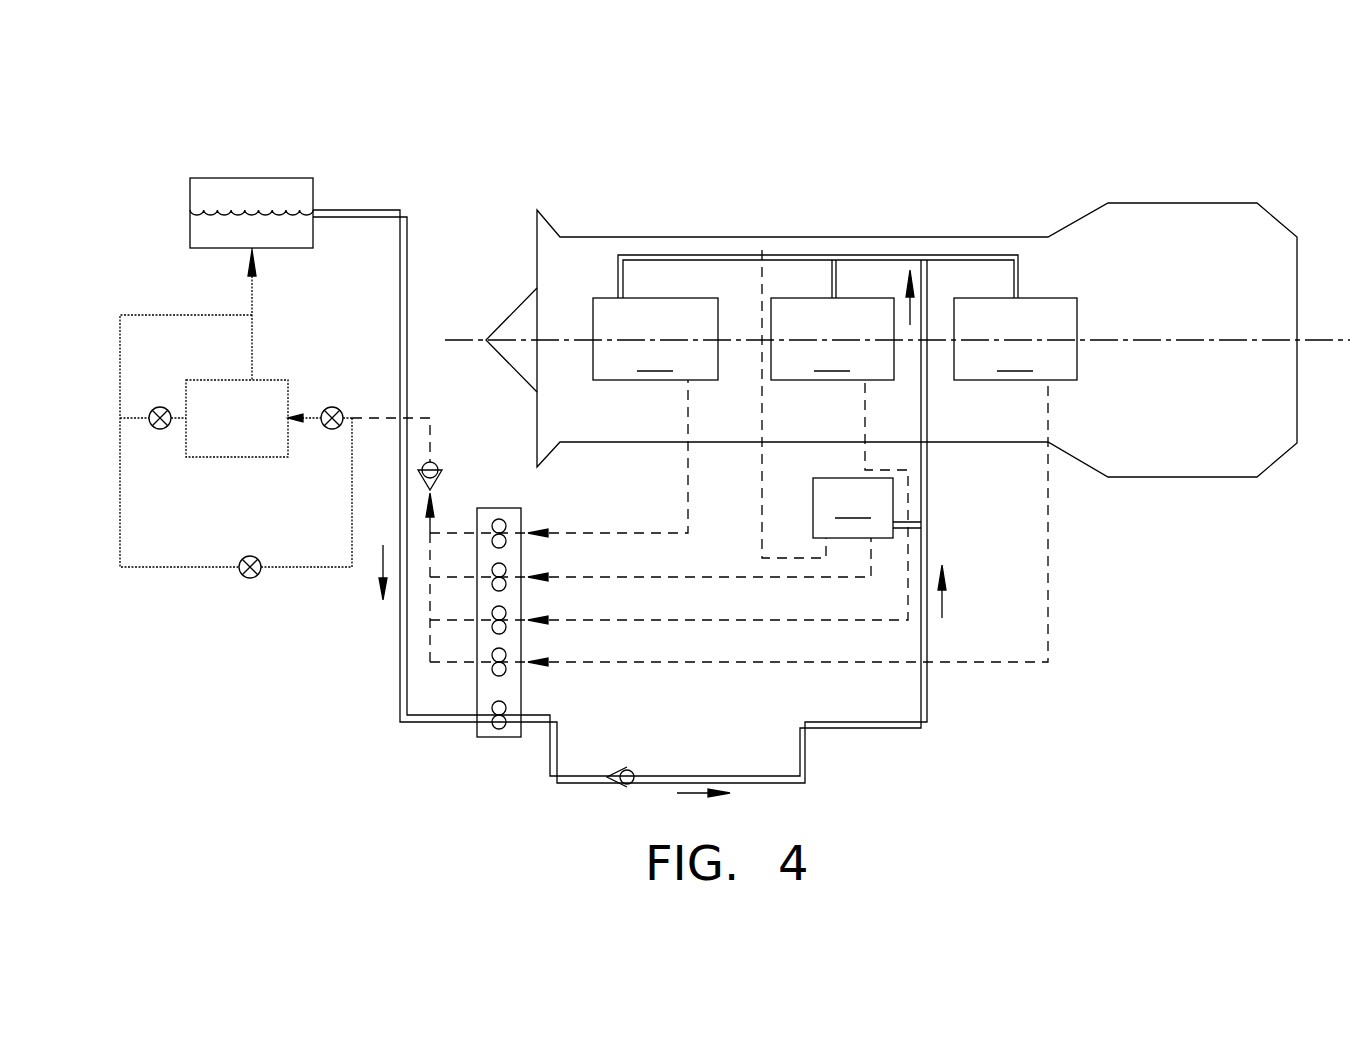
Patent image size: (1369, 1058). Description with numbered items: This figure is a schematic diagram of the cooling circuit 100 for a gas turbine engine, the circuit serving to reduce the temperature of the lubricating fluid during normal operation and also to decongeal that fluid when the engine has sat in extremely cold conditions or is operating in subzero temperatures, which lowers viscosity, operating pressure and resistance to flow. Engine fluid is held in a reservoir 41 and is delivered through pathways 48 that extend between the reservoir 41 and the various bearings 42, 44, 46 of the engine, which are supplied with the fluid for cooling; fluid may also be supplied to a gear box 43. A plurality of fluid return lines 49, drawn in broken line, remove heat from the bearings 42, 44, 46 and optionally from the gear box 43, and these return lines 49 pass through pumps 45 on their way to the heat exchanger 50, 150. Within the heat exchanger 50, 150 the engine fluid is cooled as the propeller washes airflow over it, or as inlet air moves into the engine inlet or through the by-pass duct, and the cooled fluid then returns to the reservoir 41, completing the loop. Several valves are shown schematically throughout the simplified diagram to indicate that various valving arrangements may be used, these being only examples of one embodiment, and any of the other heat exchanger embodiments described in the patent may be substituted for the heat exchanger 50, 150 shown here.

The cooling circuit 100 is at (1040, 120).
The reservoir 41 is at (253, 178).
The heat exchanger 50 is at (236, 413).
The heat exchanger 150 is at (283, 431).
The pathways 48 is at (865, 730).
The bearing 42 is at (655, 339).
The bearing 44 is at (832, 339).
The bearing 46 is at (1015, 339).
The gear box 43 is at (853, 508).
The fluid return lines 49 is at (762, 418).
The pumps 45 is at (501, 520).